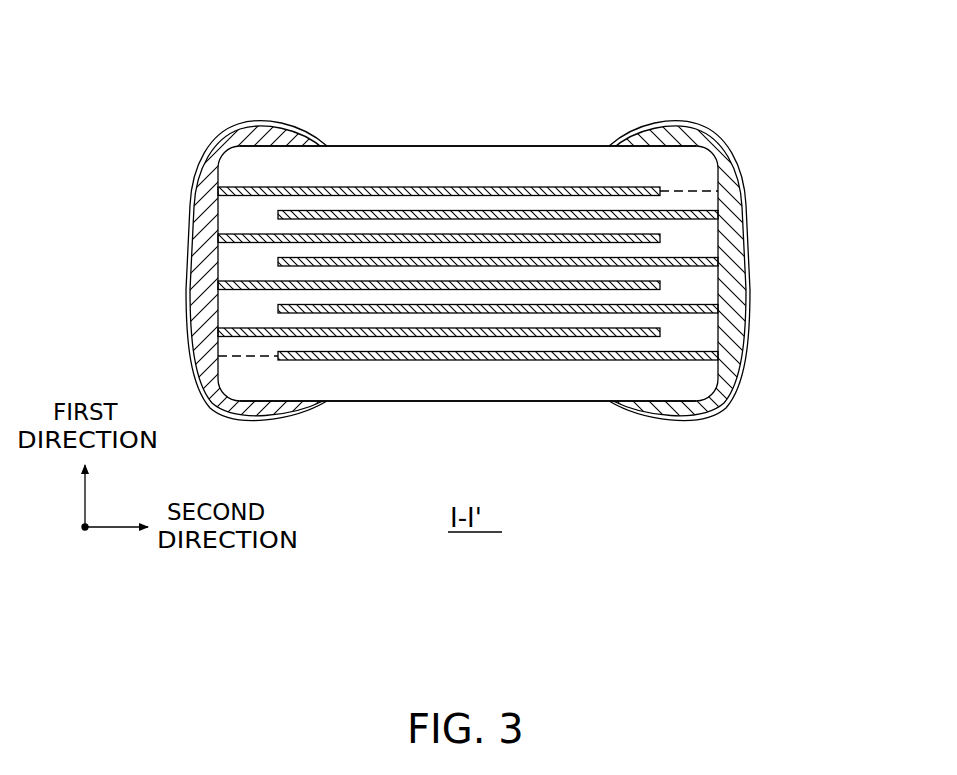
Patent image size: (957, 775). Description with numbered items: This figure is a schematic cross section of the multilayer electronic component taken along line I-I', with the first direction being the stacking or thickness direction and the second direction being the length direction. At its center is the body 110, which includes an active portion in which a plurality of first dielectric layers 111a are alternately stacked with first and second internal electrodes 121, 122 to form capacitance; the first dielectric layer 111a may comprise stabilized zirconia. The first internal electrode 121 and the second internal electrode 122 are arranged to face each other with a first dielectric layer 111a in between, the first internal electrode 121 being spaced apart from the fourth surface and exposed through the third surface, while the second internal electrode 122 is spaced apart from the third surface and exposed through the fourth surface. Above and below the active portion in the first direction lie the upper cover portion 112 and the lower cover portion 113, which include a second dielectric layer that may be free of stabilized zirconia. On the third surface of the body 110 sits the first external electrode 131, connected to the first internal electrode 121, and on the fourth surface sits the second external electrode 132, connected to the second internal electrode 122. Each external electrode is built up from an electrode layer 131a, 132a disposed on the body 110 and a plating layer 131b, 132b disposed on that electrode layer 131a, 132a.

The body 110 is at (398, 146).
The first dielectric layer 111a is at (330, 225).
The upper cover portion 112 is at (463, 165).
The lower cover portion 113 is at (484, 383).
The first internal electrode 121 is at (514, 190).
The second internal electrode 122 is at (586, 212).
The first external electrode 131 is at (182, 271).
The first electrode layer 131a is at (205, 240).
The first plating layer 131b is at (190, 296).
The second external electrode 132 is at (758, 271).
The second electrode layer 132a is at (735, 233).
The second plating layer 132b is at (748, 270).